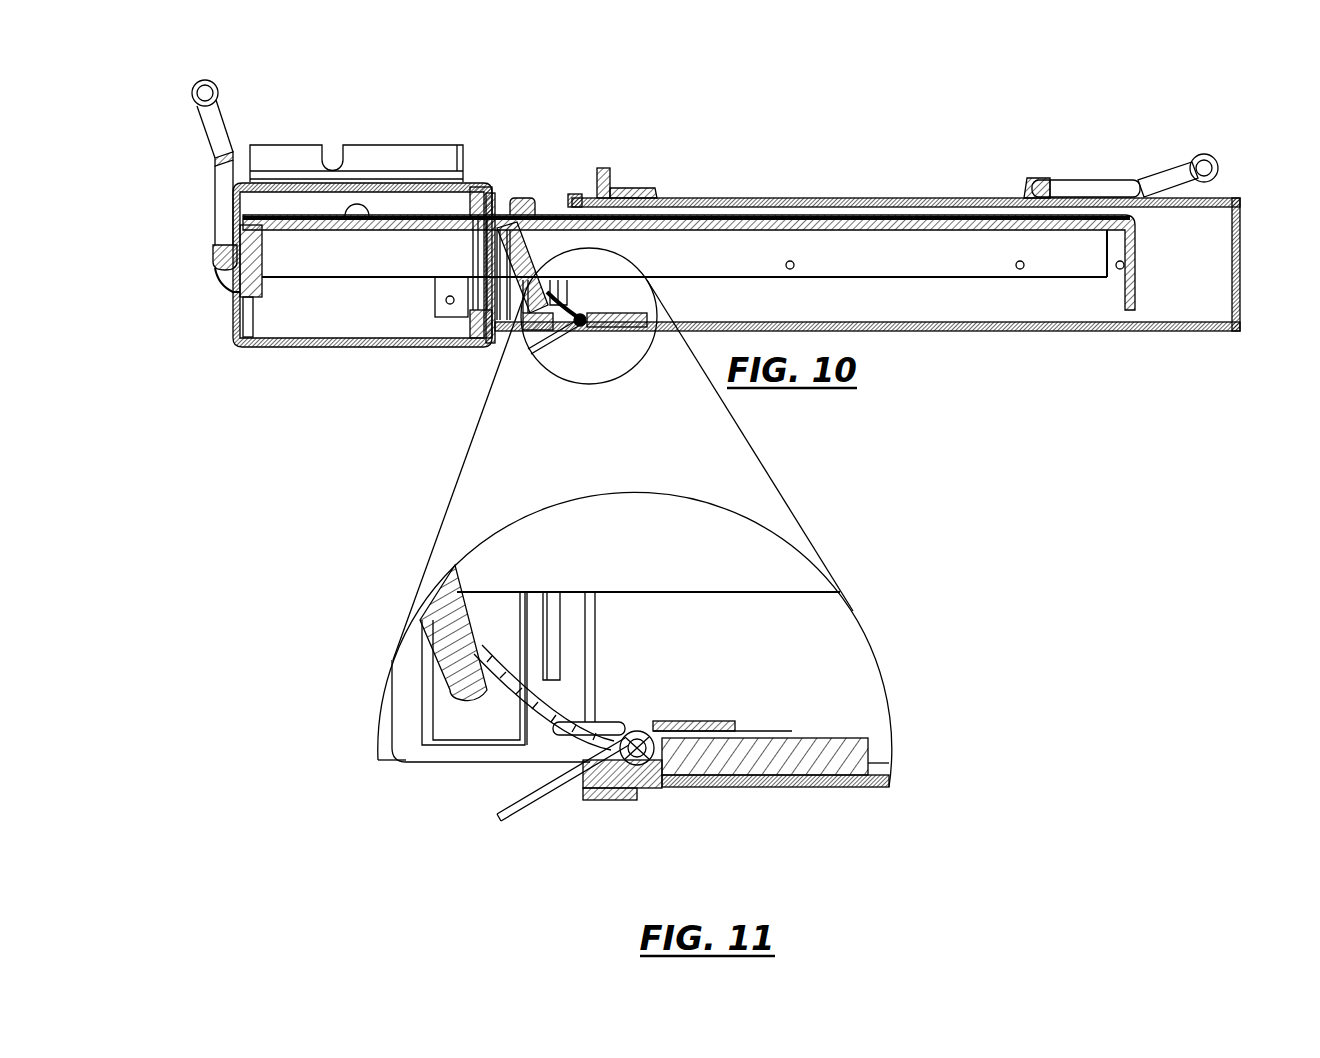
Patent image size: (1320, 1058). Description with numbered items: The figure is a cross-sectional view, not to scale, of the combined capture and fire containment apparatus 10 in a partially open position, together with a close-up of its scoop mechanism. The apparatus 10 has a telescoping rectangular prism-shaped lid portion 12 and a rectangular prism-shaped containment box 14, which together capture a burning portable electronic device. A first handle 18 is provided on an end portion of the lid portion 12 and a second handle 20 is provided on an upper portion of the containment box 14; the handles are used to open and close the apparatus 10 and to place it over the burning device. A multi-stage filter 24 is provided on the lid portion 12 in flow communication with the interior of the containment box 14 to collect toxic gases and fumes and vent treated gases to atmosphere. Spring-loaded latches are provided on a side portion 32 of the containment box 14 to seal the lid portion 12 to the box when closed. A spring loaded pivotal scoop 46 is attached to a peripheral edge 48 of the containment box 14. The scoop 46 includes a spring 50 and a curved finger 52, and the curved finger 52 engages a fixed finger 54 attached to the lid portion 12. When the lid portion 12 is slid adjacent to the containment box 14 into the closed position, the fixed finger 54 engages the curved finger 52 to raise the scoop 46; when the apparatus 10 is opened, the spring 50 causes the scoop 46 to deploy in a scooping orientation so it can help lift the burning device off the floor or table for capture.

In FIG. 10, the combined capture and fire containment apparatus 10 is at (964, 154).
In FIG. 10, the lid portion 12 is at (400, 347).
In FIG. 11, the lid portion 12 is at (486, 677).
In FIG. 10, the containment box 14 is at (1177, 331).
In FIG. 11, the containment box 14 is at (722, 782).
In FIG. 10, the first handle 18 is at (200, 104).
In FIG. 10, the second handle 20 is at (1212, 160).
In FIG. 10, the multi-stage filter 24 is at (381, 160).
In FIG. 10, the side portion 32 is at (236, 320).
In FIG. 10, the spring loaded pivotal scoop 46 is at (548, 338).
In FIG. 11, the spring loaded pivotal scoop 46 is at (552, 800).
In FIG. 10, the peripheral edge 48 is at (583, 326).
In FIG. 11, the peripheral edge 48 is at (585, 790).
In FIG. 10, the spring 50 is at (595, 313).
In FIG. 11, the spring 50 is at (672, 720).
In FIG. 10, the curved finger 52 is at (545, 312).
In FIG. 11, the curved finger 52 is at (505, 712).
In FIG. 10, the fixed finger 54 is at (507, 323).
In FIG. 11, the fixed finger 54 is at (476, 560).